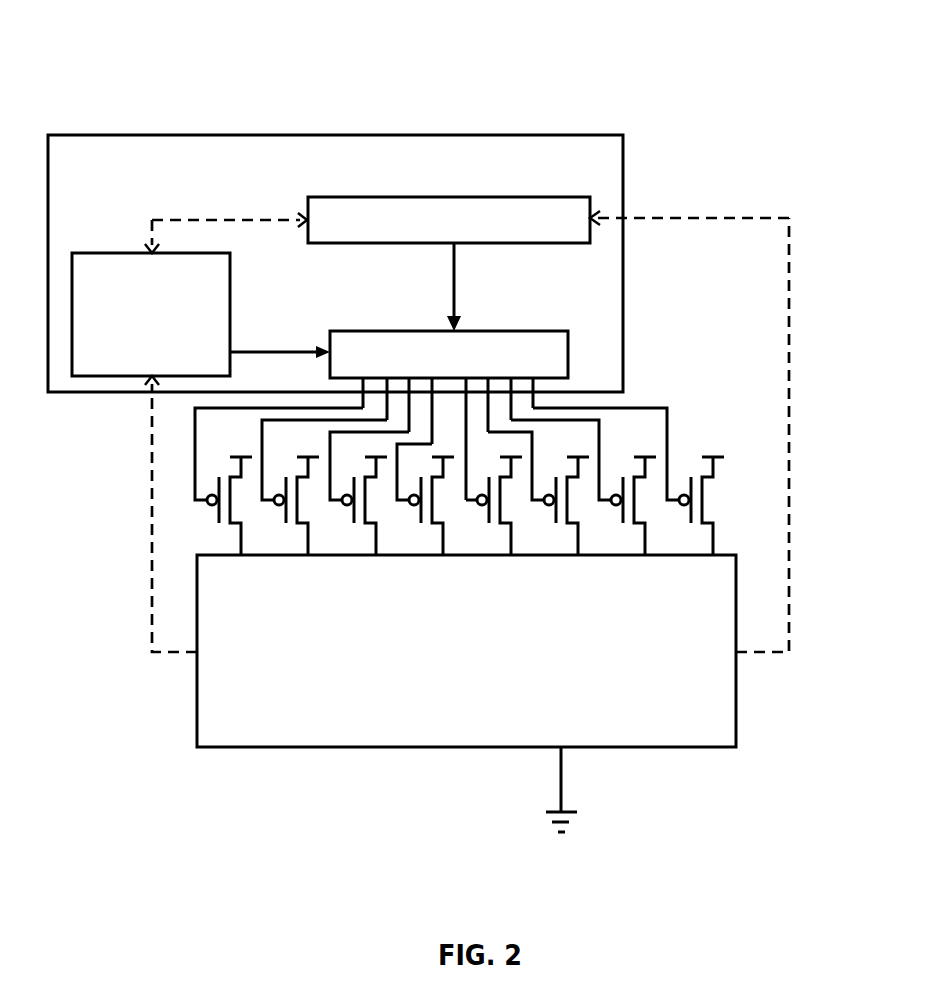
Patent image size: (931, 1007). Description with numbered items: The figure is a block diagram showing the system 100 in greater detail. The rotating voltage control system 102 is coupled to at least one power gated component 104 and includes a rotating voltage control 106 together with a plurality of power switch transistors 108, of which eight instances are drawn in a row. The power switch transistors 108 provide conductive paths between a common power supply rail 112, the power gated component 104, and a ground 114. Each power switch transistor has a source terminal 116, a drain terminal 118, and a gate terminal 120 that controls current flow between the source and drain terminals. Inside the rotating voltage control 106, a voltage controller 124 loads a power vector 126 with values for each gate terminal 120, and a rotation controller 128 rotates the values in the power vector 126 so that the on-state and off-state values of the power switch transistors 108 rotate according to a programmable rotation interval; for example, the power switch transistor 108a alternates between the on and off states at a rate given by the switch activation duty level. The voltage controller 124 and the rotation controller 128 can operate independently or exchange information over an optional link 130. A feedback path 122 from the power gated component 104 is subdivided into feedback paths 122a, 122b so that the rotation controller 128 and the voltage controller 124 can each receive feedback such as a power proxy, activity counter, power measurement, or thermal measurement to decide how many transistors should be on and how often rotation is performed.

The system 100 is at (382, 23).
The rotating voltage control system 102 is at (686, 190).
The power gated component 104 is at (358, 748).
The rotating voltage control 106 is at (75, 134).
The power switch transistors 108 is at (218, 481).
The power switch transistor 108a is at (195, 522).
The common power supply rail 112 is at (653, 433).
The ground 114 is at (561, 778).
The source terminal 116 is at (717, 468).
The drain terminal 118 is at (716, 546).
The gate terminal 120 is at (699, 467).
The feedback path 122 is at (448, 474).
The feedback path 122a is at (151, 652).
The feedback path 122b is at (772, 652).
The voltage controller 124 is at (349, 197).
The power vector 126 is at (345, 331).
The rotation controller 128 is at (113, 253).
The optional link 130 is at (163, 220).